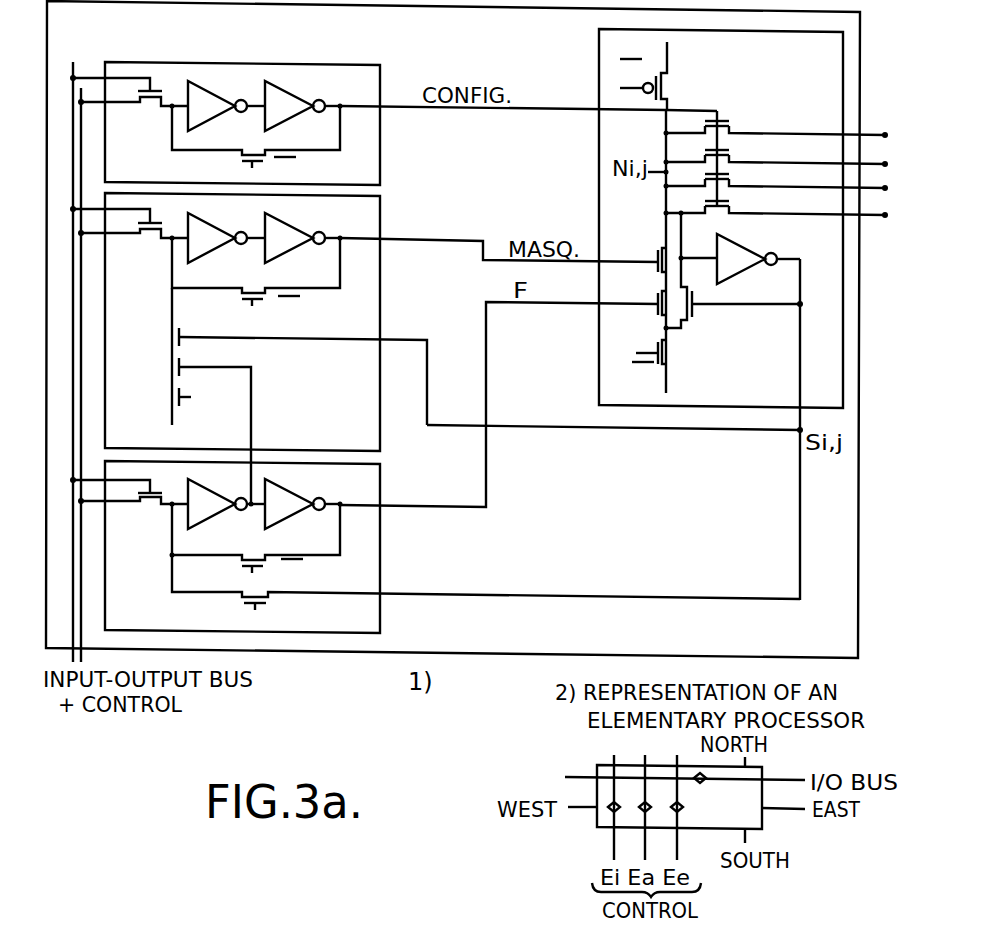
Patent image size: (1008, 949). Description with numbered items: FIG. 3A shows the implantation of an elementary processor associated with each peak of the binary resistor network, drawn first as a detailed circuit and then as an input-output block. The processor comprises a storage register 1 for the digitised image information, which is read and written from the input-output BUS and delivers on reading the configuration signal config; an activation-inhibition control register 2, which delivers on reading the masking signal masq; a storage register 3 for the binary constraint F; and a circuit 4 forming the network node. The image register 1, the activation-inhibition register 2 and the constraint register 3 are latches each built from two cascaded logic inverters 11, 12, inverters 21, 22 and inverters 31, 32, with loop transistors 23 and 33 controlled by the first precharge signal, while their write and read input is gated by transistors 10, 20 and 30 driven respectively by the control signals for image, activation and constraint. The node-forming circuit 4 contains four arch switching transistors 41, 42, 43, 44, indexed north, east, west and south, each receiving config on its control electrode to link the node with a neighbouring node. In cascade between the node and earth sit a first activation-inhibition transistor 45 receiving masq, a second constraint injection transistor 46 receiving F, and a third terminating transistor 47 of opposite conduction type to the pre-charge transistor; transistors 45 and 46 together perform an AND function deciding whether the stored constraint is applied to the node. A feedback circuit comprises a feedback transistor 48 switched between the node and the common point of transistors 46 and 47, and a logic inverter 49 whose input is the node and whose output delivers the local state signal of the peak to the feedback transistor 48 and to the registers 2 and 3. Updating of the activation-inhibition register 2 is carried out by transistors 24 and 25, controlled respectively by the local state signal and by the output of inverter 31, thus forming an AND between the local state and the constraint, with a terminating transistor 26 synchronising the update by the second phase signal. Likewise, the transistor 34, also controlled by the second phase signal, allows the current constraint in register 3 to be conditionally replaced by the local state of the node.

The storage register 1 is at (380, 79).
The activation-inhibition control register 2 is at (382, 215).
The storage register for the binary constraint 3 is at (376, 484).
The circuit forming a node 4 is at (604, 43).
The transistor 10 is at (150, 103).
The logic inverter 11 is at (203, 100).
The logic inverter 12 is at (282, 100).
The transistor 20 is at (150, 233).
The logic inverter 21 is at (205, 224).
The logic inverter 22 is at (288, 224).
The loop transistor 23 is at (260, 290).
The transistor 24 is at (172, 334).
The transistor 25 is at (172, 361).
The terminating transistor 26 is at (172, 397).
The transistor 30 is at (148, 505).
The logic inverter 31 is at (213, 473).
The logic inverter 32 is at (287, 502).
The loop transistor 33 is at (258, 555).
The transistor 34 is at (258, 598).
The switching transistor 41 is at (727, 121).
The switching transistor 42 is at (724, 153).
The switching transistor 43 is at (724, 178).
The switching transistor 44 is at (726, 207).
The first activation-inhibition transistor 45 is at (656, 252).
The second binary constraint injection transistor 46 is at (655, 293).
The third terminating transistor 47 is at (655, 341).
The feedback transistor 48 is at (693, 313).
The logic inverter 49 is at (732, 252).